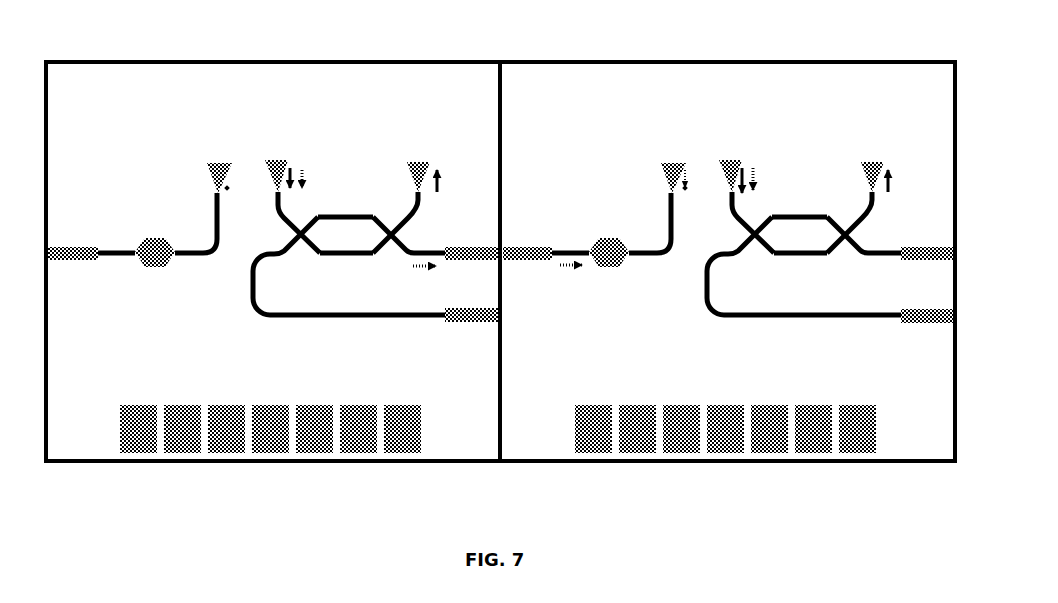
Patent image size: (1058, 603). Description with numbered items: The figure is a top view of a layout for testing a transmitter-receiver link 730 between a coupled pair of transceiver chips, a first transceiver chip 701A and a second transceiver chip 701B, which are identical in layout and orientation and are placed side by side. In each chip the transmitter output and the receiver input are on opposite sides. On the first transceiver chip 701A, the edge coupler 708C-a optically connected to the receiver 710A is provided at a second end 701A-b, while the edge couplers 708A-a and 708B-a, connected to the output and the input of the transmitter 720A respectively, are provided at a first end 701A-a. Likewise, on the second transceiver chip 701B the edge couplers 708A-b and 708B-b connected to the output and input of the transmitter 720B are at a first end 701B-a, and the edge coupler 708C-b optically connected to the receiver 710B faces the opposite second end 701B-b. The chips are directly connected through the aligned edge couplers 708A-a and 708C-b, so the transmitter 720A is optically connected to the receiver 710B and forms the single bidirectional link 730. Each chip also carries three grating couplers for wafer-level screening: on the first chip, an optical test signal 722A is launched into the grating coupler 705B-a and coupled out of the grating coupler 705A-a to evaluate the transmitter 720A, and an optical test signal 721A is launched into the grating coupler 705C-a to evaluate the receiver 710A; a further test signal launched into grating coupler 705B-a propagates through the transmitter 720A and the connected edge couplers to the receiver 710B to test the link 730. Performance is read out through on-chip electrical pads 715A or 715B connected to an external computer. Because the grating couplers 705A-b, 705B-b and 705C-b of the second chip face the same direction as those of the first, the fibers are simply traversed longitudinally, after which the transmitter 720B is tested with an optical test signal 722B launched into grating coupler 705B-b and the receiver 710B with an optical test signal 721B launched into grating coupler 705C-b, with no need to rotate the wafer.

The transmitter-receiver link 730 is at (849, 44).
The first transceiver chip 701A is at (104, 93).
The second transceiver chip 701B is at (727, 292).
The first end of the first transceiver chip 701A-a is at (492, 472).
The second end of the first transceiver chip 701A-b is at (53, 471).
The first end of the second transceiver chip 701B-a is at (909, 475).
The second end of the second transceiver chip 701B-b is at (544, 474).
The grating coupler 705A-a is at (408, 163).
The grating coupler 705B-a is at (270, 165).
The grating coupler 705C-a is at (207, 170).
The grating coupler 705A-b is at (857, 186).
The grating coupler 705B-b is at (719, 186).
The grating coupler 705C-b is at (622, 201).
The edge coupler 708A-a is at (488, 261).
The edge coupler 708B-a is at (478, 322).
The edge coupler 708C-a is at (70, 260).
The edge coupler 708A-b is at (909, 265).
The edge coupler 708B-b is at (916, 330).
The edge coupler 708C-b is at (537, 268).
The receiver 710A is at (157, 268).
The receiver 710B is at (618, 266).
The electrical pads 715A is at (115, 465).
The electrical pads 715B is at (726, 455).
The transmitter 720A is at (305, 255).
The transmitter 720B is at (804, 266).
The optical test signal 721A is at (227, 191).
The optical test signal 721B is at (699, 208).
The optical test signal 722A is at (293, 190).
The optical test signal 722B is at (917, 187).